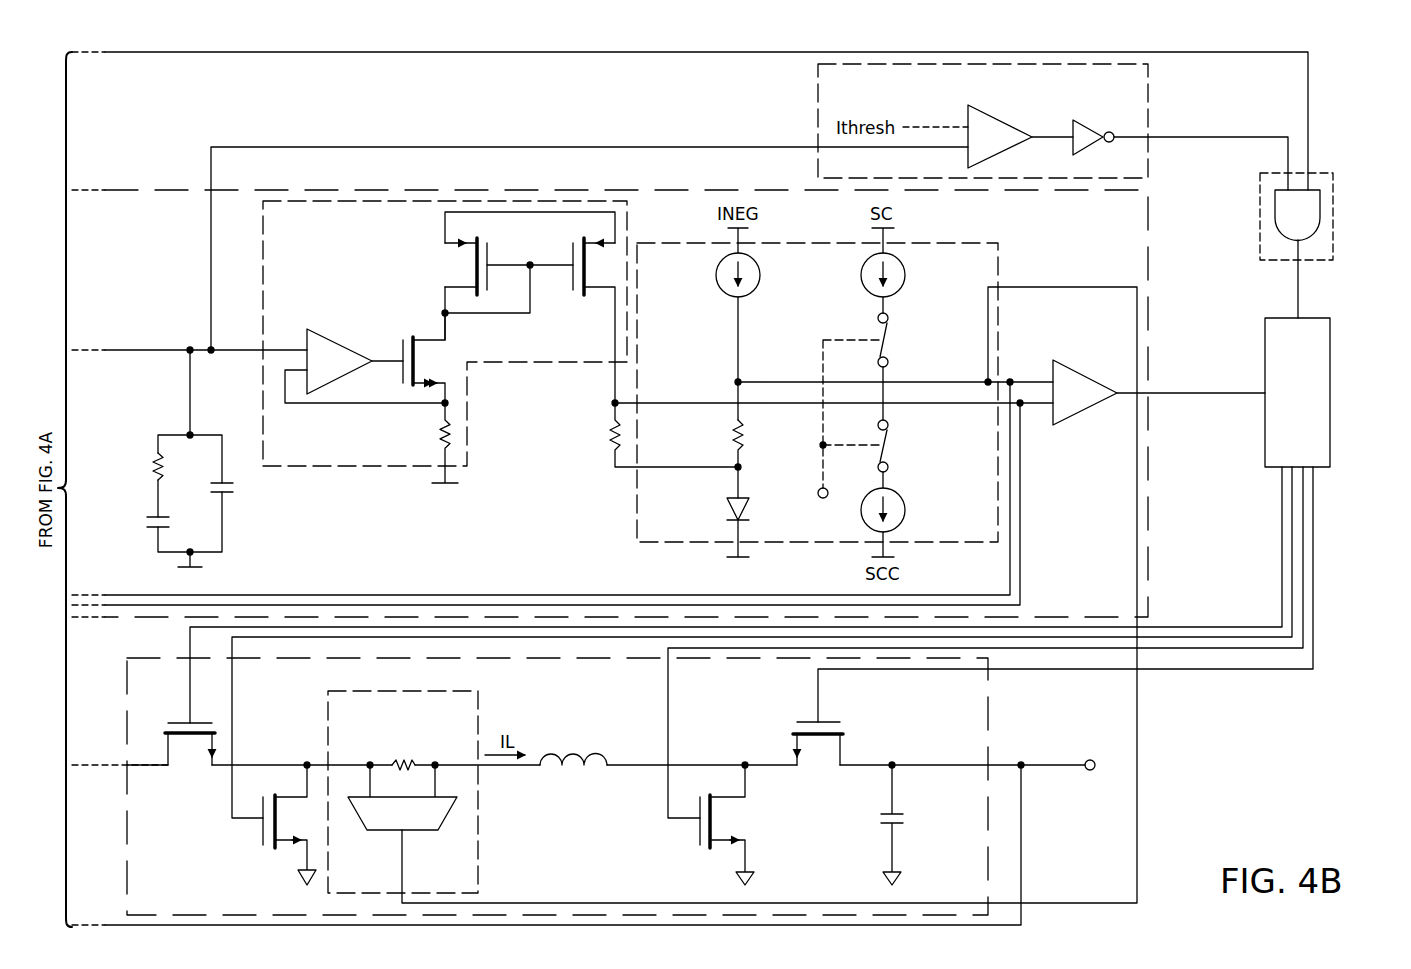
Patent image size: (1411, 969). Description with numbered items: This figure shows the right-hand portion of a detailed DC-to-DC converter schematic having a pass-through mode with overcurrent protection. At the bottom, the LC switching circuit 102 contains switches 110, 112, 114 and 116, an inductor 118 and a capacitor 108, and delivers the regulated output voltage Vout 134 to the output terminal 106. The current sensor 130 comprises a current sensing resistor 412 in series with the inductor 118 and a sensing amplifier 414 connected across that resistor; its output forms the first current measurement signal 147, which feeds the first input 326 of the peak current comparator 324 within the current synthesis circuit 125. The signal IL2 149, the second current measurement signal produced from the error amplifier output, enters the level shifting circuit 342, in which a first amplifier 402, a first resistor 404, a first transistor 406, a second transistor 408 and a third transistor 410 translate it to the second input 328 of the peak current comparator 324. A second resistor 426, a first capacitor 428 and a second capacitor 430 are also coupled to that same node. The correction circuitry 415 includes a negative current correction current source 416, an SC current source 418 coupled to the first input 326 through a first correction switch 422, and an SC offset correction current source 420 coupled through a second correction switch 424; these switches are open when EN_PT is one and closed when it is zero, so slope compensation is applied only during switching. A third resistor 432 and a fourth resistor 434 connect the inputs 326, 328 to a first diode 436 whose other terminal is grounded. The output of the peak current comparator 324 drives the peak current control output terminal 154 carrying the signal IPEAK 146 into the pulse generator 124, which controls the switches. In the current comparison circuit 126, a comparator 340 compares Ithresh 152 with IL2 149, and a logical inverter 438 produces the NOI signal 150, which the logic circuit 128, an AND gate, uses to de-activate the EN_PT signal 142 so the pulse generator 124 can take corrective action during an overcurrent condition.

The LC switching circuit 102 is at (992, 711).
The output terminal 106 is at (1093, 759).
The capacitor 108 is at (905, 821).
The switch 110 is at (180, 721).
The switch 112 is at (260, 827).
The switch 114 is at (697, 831).
The switch 116 is at (832, 722).
The inductor 118 is at (558, 740).
The pulse generator 124 is at (1333, 383).
The current synthesis circuit 125 is at (1152, 249).
The current comparison circuit 126 is at (816, 119).
The logic circuit 128 is at (1336, 219).
The current sensor 130 is at (325, 725).
The output voltage Vout 134 is at (1050, 770).
The EN_PT signal 142 is at (1303, 296).
The IPEAK signal 146 is at (1190, 396).
The first current measurement signal 147 is at (1068, 286).
The IL2 signal 149 is at (153, 354).
The NOI signal 150 is at (1205, 141).
The Ithresh 152 is at (940, 126).
The peak current control output terminal 154 is at (1262, 399).
The peak current comparator 324 is at (870, 391).
The first input 326 is at (1044, 372).
The second input 328 is at (1044, 411).
The comparator 340 is at (1022, 110).
The level shifting circuit 342 is at (351, 470).
The first amplifier 402 is at (342, 335).
The first resistor 404 is at (441, 436).
The first transistor 406 is at (401, 346).
The second transistor 408 is at (493, 253).
The third transistor 410 is at (568, 282).
The current sensing resistor 412 is at (395, 759).
The sensing amplifier 414 is at (387, 832).
The correction circuitry 415 is at (633, 509).
The negative current correction current source 416 is at (763, 273).
The SC current source 418 is at (908, 273).
The SC offset correction current source 420 is at (907, 513).
The first correction switch 422 is at (893, 340).
The second correction switch 424 is at (893, 448).
The second resistor 426 is at (156, 463).
The first capacitor 428 is at (148, 521).
The second capacitor 430 is at (234, 490).
The third resistor 432 is at (731, 437).
The fourth resistor 434 is at (610, 432).
The first diode 436 is at (726, 508).
The logical inverter 438 is at (1087, 122).